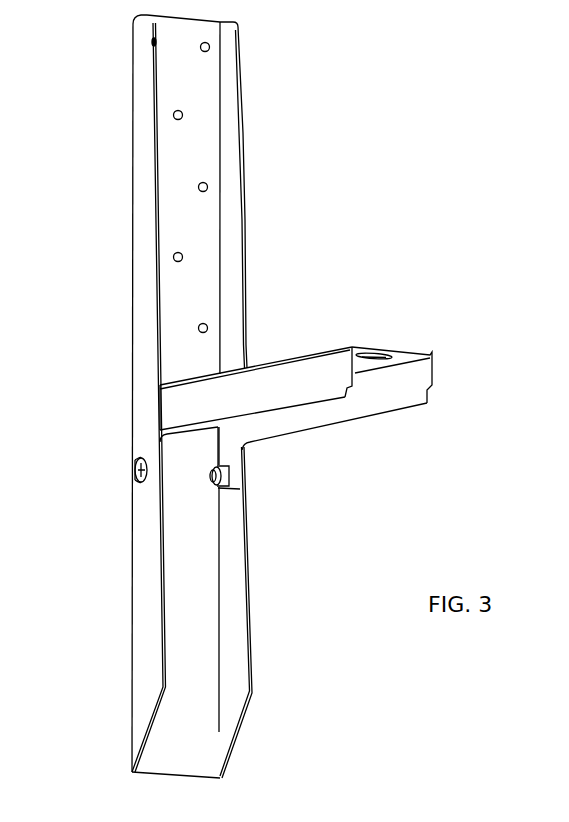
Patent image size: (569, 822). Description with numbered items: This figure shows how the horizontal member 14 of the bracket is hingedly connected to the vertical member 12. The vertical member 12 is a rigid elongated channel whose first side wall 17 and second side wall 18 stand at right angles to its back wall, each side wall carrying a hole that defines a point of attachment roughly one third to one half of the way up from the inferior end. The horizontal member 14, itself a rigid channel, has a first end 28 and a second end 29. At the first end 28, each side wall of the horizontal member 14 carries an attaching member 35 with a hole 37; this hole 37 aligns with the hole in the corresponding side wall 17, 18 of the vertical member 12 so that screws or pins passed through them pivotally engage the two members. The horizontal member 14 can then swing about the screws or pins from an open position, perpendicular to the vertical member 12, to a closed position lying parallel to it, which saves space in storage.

The vertical member 12 is at (167, 396).
The vertical member first side wall 17 is at (145, 297).
The vertical member second side wall 18 is at (230, 232).
The horizontal member 14 is at (294, 416).
The first end 28 is at (173, 401).
The second end 29 is at (418, 352).
The attaching member 35 is at (227, 449).
The hole 37 is at (228, 473).